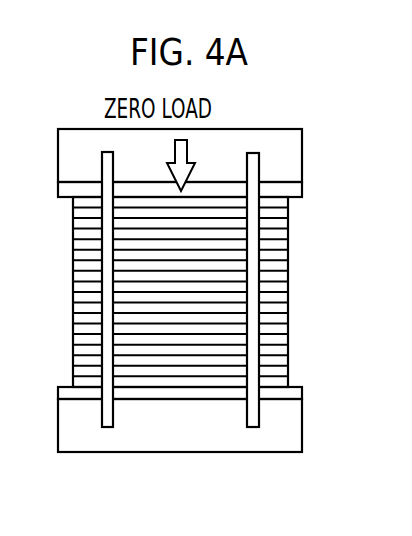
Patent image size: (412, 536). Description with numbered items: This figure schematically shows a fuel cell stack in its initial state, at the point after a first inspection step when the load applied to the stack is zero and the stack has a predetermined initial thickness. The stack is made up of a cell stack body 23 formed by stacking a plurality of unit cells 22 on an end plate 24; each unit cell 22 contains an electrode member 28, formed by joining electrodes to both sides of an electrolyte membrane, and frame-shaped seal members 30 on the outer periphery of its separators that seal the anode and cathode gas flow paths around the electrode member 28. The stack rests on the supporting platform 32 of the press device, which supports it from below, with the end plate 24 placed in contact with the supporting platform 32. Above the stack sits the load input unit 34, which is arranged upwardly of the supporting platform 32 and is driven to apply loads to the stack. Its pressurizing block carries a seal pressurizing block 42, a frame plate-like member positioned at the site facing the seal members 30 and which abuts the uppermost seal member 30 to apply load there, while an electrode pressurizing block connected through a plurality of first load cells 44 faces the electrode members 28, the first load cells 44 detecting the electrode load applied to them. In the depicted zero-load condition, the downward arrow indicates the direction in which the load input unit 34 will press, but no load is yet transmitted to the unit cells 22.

The load input unit 34 is at (288, 155).
The seal pressurizing block 42 is at (292, 188).
The cell stack body 23 is at (237, 292).
The electrode member 28 is at (235, 276).
The seal member 30 is at (213, 320).
The unit cell 22 is at (237, 294).
The end plate 24 is at (290, 394).
The supporting platform 32 is at (285, 427).
The first load cell 44 is at (228, 188).